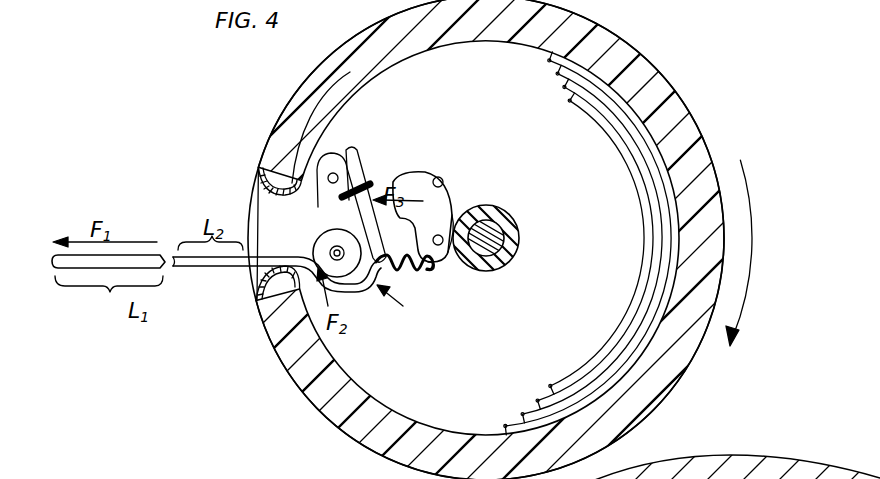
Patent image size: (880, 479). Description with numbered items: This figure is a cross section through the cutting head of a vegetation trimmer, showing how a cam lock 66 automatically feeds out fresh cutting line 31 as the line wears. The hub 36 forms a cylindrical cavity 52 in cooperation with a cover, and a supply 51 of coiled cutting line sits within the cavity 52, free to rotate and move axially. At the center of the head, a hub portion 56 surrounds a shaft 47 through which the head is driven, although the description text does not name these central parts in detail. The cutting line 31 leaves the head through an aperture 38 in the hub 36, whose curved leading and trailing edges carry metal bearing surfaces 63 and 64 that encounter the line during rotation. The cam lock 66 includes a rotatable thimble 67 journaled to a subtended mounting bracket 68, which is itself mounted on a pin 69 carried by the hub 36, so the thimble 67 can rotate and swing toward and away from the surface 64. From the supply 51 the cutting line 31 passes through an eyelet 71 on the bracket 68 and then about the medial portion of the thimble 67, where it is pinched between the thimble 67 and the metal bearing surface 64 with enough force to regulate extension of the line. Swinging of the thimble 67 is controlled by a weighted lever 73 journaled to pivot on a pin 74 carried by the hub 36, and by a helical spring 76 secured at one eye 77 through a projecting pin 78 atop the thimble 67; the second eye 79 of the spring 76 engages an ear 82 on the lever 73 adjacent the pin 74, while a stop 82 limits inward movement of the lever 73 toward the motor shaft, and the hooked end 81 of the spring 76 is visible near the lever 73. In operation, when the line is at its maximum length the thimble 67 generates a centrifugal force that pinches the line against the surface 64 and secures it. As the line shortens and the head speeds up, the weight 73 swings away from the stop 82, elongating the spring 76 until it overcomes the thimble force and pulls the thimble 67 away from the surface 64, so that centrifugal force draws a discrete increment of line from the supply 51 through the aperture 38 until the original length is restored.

The cutting line 31 is at (122, 257).
The hub 36 is at (708, 143).
The aperture 38 is at (270, 213).
The shaft 47 is at (492, 238).
The supply of coiled cutting line 51 is at (633, 106).
The cylindrical cavity 52 is at (518, 348).
The hub 56 is at (508, 214).
The metal bearing surface 63 is at (247, 200).
The metal bearing surface 64 is at (262, 271).
The cam lock 66 is at (403, 307).
The rotatable thimble 67 is at (353, 274).
The mounting bracket 68 is at (340, 176).
The pin 69 is at (352, 156).
The eyelet 71 is at (364, 181).
The weighted lever 73 is at (449, 203).
The pin 74 is at (449, 216).
The helical spring 76 is at (403, 268).
The eye of spring 77 is at (338, 246).
The projecting pin 78 is at (328, 253).
The second eye of spring 79 is at (422, 260).
The strip end hook 81 is at (438, 265).
The stop 82 is at (442, 180).